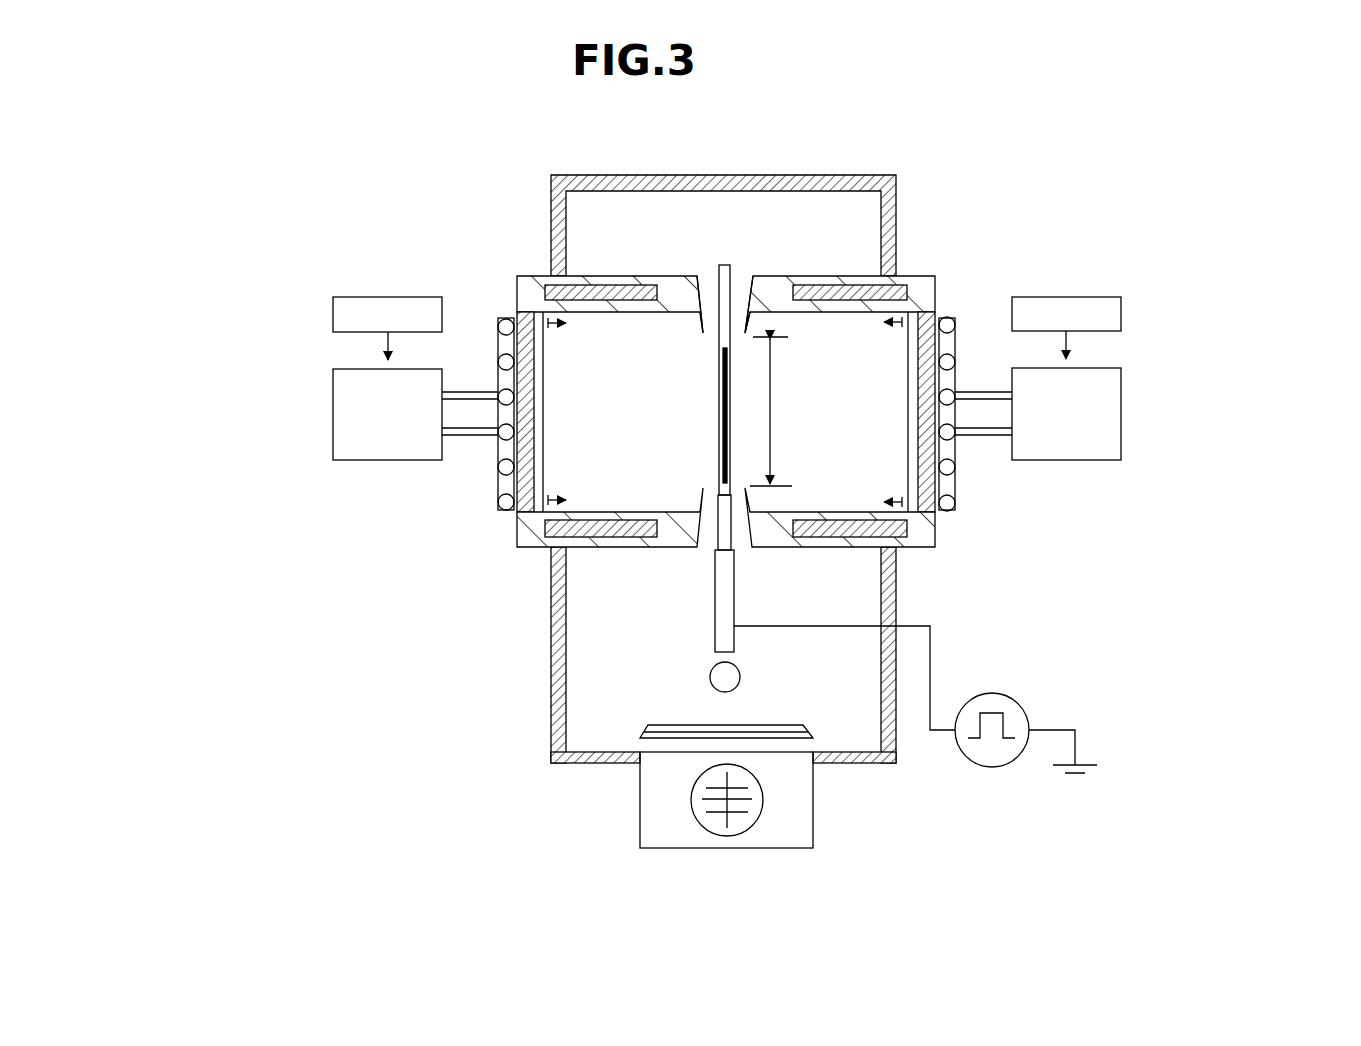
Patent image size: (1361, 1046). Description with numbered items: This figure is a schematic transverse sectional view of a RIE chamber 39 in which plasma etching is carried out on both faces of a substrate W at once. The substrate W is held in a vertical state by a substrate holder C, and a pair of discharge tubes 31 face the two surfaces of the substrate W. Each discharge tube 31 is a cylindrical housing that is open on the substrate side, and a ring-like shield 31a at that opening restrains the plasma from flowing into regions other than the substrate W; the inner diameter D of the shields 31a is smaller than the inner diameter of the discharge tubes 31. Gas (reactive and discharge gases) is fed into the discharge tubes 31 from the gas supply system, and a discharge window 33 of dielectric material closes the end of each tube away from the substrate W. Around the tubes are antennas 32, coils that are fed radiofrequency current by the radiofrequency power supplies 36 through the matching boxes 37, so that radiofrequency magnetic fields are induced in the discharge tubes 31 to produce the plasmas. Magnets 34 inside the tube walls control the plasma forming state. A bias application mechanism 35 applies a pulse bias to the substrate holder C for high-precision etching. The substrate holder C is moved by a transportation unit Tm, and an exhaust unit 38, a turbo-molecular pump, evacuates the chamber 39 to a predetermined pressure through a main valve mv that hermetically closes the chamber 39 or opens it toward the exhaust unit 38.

The discharge tube 31 is at (918, 277).
The ring-like shield 31a is at (745, 330).
The antenna 32 is at (948, 318).
The discharge window 33 is at (930, 512).
The magnet 34 is at (903, 523).
The bias application mechanism 35 is at (1020, 703).
The radiofrequency power supply 36 is at (1160, 301).
The matching box 37 is at (1158, 388).
The exhaust unit 38 is at (813, 808).
The RIE chamber 39 is at (858, 180).
The substrate W is at (708, 335).
The inner diameter of the shields D is at (775, 411).
The substrate holder C is at (720, 602).
The transportation unit Tm is at (713, 676).
The main valve mv is at (642, 735).
The gas Gas is at (545, 536).